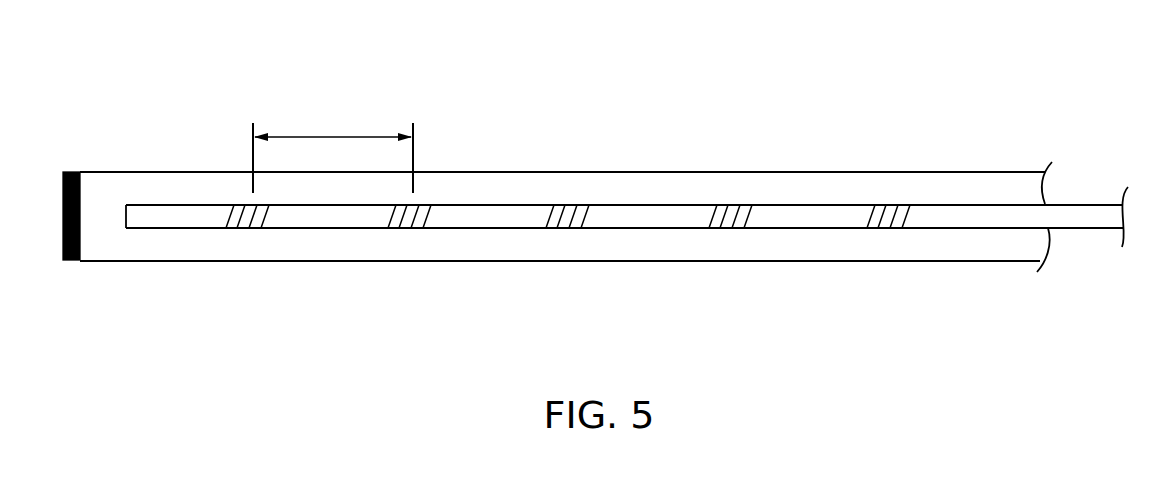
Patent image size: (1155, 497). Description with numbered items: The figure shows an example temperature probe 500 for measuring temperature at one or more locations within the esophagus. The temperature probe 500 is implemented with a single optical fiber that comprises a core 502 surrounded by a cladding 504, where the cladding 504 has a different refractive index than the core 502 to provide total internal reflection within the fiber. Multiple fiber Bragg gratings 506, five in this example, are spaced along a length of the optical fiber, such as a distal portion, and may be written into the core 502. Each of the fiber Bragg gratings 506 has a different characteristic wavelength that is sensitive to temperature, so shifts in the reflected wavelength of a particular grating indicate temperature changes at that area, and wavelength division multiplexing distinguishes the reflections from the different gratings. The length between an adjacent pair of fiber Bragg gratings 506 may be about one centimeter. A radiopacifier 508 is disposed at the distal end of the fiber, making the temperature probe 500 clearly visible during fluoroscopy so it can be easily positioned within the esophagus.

The temperature probe 500 is at (585, 168).
The core 502 is at (657, 217).
The cladding 504 is at (663, 190).
The fiber Bragg gratings 506 is at (733, 199).
The radiopacifier 508 is at (64, 170).